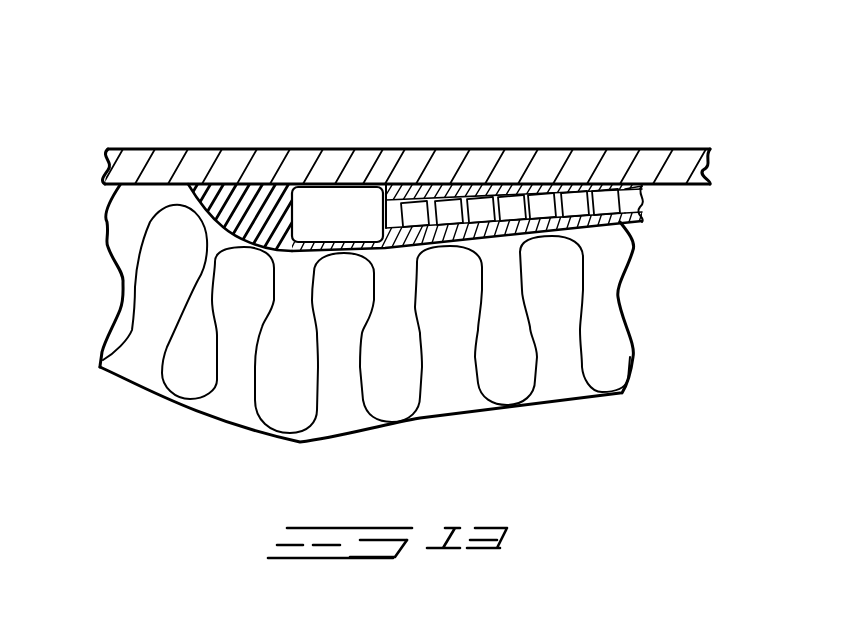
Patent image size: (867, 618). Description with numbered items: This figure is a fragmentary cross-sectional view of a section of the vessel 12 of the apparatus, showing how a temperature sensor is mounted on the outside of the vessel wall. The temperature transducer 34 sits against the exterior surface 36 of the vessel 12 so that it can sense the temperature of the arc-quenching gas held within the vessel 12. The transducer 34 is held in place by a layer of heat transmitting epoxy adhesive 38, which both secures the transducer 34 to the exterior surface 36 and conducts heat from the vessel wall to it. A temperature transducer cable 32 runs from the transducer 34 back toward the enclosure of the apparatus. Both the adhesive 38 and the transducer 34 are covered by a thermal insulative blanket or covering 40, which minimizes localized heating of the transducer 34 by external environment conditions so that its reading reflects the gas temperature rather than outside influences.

The vessel 12 is at (548, 150).
The temperature transducer cable 32 is at (612, 204).
The temperature transducer 34 is at (327, 204).
The exterior surface 36 is at (112, 170).
The heat transmitting epoxy adhesive 38 is at (243, 205).
The thermal insulative blanket 40 is at (392, 407).